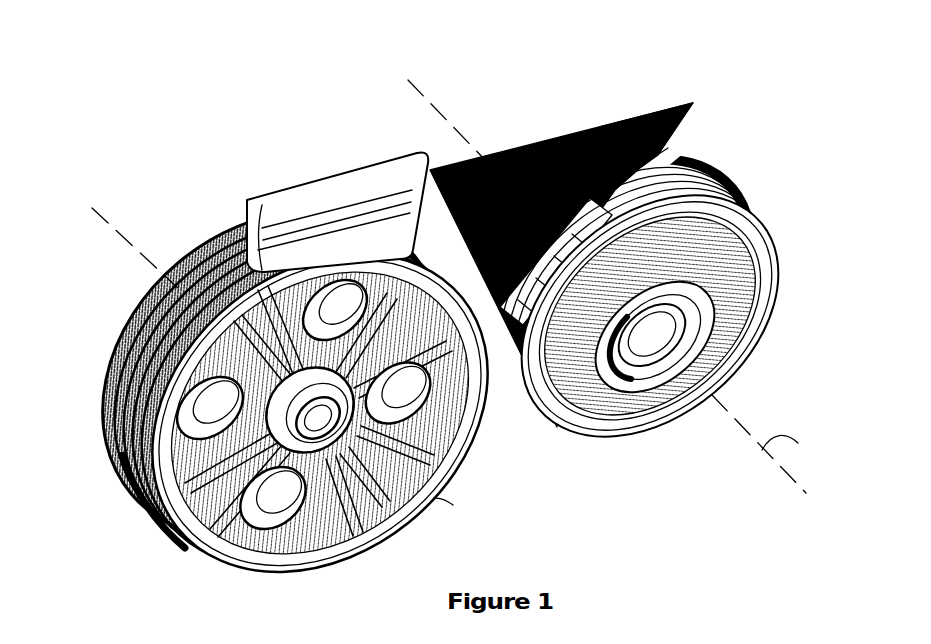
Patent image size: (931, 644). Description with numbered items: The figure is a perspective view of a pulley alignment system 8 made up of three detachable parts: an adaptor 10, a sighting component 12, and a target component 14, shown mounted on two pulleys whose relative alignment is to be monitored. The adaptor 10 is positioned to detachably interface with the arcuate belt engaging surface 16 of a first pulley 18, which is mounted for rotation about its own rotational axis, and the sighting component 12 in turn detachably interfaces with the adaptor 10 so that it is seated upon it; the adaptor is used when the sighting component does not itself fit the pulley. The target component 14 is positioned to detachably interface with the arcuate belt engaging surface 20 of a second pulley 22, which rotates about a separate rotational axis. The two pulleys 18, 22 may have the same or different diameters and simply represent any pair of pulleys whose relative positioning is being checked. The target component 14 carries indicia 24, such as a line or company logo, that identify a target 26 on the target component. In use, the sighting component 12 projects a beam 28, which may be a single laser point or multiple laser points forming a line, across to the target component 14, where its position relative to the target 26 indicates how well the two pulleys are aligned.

The pulley alignment system 8 is at (550, 88).
The adaptor 10 is at (242, 252).
The sighting component 12 is at (279, 200).
The target component 14 is at (677, 170).
The arcuate belt engaging surface 16 is at (138, 343).
The first pulley 18 is at (110, 405).
The arcuate belt engaging surface 20 is at (712, 204).
The second pulley 22 is at (771, 297).
The indicia 24 is at (662, 158).
The target 26 is at (651, 158).
The beam 28 is at (645, 117).